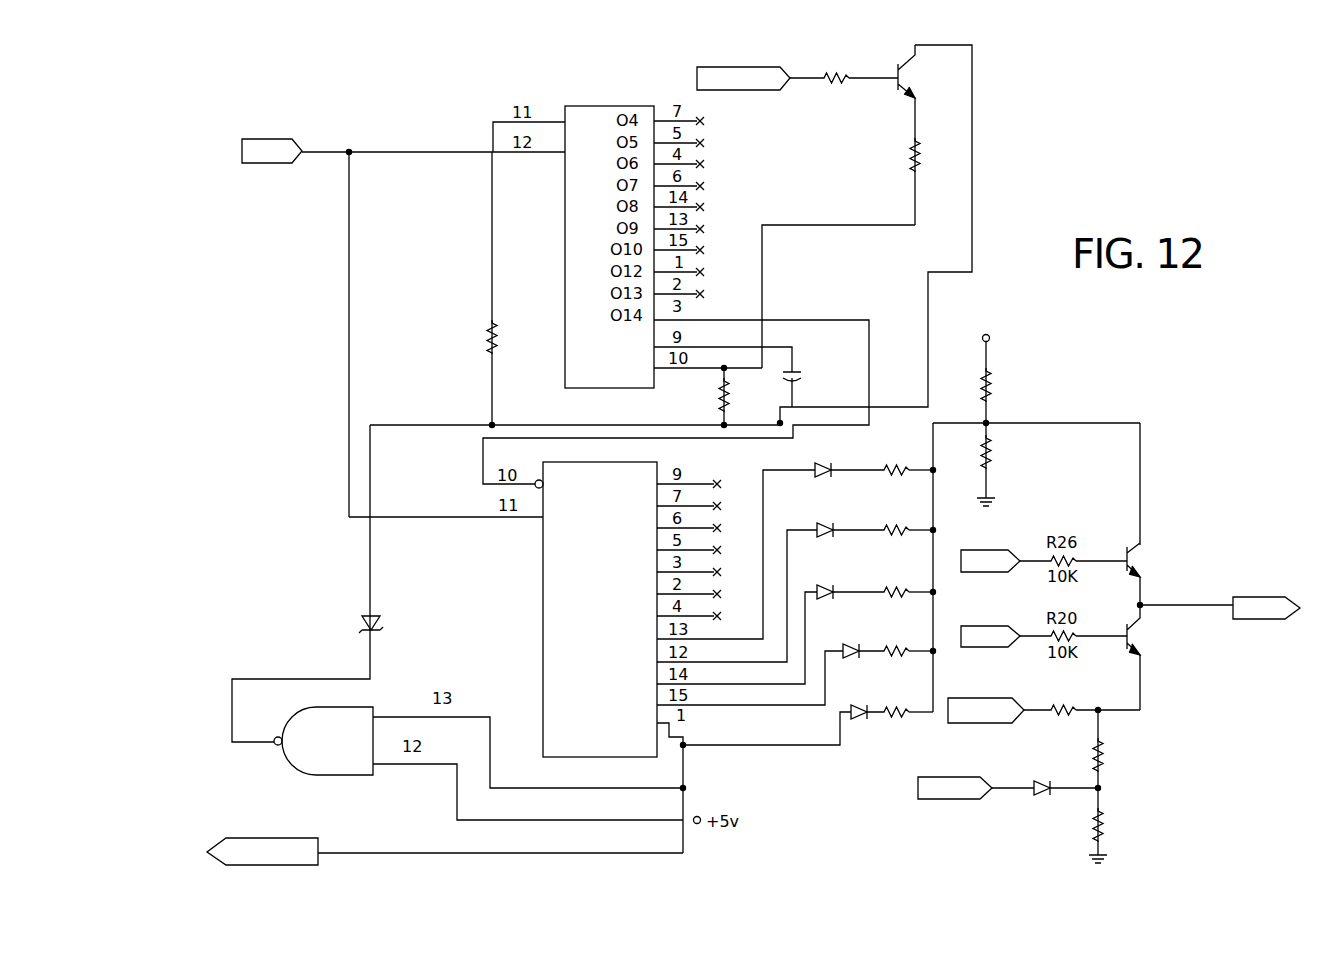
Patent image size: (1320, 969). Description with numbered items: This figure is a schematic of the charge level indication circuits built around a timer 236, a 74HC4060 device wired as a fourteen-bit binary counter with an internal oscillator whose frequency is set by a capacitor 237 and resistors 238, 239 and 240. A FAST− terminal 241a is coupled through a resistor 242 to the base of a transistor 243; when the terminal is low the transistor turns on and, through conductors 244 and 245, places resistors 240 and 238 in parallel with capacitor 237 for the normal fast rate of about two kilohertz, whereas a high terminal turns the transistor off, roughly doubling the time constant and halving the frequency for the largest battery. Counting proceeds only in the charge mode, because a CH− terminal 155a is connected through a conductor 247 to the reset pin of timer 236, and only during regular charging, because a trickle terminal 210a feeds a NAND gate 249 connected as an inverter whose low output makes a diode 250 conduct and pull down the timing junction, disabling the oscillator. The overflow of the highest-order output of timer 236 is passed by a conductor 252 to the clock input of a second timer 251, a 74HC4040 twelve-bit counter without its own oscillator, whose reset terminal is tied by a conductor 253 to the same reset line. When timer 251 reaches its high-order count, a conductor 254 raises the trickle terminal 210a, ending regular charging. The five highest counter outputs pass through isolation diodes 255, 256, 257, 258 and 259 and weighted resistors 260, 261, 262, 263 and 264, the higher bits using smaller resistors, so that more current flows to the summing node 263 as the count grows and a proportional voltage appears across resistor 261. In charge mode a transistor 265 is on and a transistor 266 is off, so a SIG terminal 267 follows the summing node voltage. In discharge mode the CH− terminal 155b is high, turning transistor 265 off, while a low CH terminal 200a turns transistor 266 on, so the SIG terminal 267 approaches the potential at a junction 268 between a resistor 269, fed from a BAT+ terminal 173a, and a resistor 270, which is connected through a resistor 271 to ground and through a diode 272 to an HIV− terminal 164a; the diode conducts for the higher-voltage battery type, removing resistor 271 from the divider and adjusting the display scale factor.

The CH− terminal 155a is at (296, 140).
The CH− terminal 155b is at (1012, 556).
The HIV− terminal 164a is at (920, 797).
The BAT+ terminal 173a is at (1000, 702).
The CH terminal 200a is at (1030, 612).
The trickle terminal 210a is at (303, 830).
The timer 236 is at (626, 72).
The capacitor 237 is at (796, 372).
The resistor 238 is at (721, 396).
The resistor 239 is at (492, 348).
The resistor 240 is at (913, 162).
The FAST− terminal 241a is at (776, 68).
The resistor 242 is at (822, 82).
The transistor 243 is at (898, 84).
The conductor 244 is at (868, 225).
The conductor 245 is at (974, 240).
The conductor 247 is at (455, 152).
The NAND gate 249 is at (312, 738).
The diode 250 is at (366, 624).
The timer 251 is at (553, 648).
The conductor 252 is at (884, 296).
The conductor 253 is at (349, 374).
The conductor 254 is at (440, 853).
The isolation diode 255 is at (815, 468).
The isolation diode 256 is at (805, 532).
The isolation diode 257 is at (818, 592).
The isolation diode 258 is at (845, 650).
The isolation diode 259 is at (852, 720).
The resistor 260 is at (905, 469).
The resistor 261 is at (905, 530).
The resistor 262 is at (905, 592).
The summing node 263 is at (908, 651).
The resistor 264 is at (908, 712).
The transistor 265 is at (1131, 554).
The transistor 266 is at (1136, 648).
The SIG terminal 267 is at (1288, 580).
The junction 268 is at (1108, 712).
The resistor 269 is at (1045, 714).
The resistor 270 is at (1103, 767).
The resistor 271 is at (1095, 830).
The diode 272 is at (1036, 794).